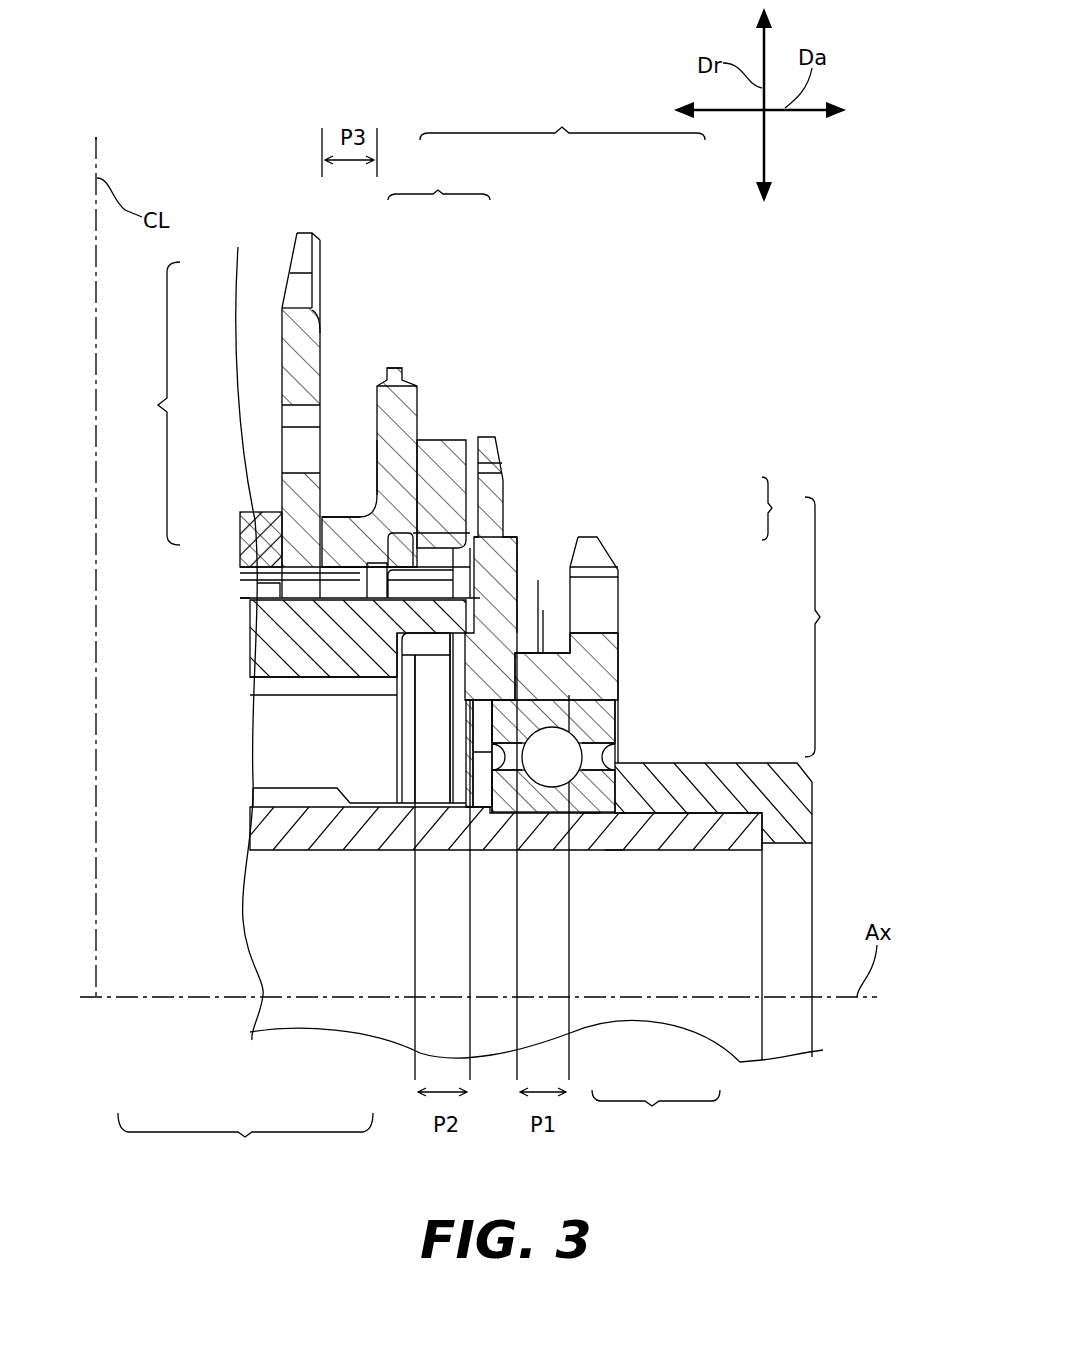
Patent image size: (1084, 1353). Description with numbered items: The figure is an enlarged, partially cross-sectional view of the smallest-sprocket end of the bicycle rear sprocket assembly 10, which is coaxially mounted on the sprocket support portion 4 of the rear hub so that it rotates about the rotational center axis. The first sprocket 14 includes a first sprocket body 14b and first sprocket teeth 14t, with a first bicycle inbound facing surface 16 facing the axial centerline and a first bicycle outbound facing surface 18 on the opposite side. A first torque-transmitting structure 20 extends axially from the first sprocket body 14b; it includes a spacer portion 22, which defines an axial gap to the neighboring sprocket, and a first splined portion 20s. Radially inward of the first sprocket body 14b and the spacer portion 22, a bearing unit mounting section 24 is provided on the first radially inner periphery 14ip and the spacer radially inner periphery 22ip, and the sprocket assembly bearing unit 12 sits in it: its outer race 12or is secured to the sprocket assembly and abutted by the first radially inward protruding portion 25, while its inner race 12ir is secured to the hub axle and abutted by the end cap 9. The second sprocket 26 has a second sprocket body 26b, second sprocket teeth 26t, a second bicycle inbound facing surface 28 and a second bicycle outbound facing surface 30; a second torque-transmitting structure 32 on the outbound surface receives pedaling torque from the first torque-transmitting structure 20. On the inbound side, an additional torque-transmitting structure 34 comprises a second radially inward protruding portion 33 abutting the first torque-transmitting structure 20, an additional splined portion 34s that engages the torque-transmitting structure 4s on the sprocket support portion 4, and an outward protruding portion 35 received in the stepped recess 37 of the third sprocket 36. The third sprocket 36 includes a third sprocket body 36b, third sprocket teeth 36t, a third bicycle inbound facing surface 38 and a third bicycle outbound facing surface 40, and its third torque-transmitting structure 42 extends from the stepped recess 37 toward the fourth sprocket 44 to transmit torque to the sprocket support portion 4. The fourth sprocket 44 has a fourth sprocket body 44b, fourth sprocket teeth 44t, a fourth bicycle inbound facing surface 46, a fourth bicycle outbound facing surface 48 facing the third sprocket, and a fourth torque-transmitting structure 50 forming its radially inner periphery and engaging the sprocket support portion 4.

The sprocket support portion 4 is at (272, 635).
The torque-transmitting structure 4s is at (273, 583).
The end cap 9 is at (814, 820).
The bicycle rear sprocket assembly 10 is at (745, 344).
The sprocket assembly bearing unit 12 is at (518, 972).
The outer race 12or is at (583, 790).
The inner race 12ir is at (613, 790).
The first sprocket 14 is at (701, 630).
The first sprocket teeth 14t is at (600, 602).
The first sprocket body 14b is at (598, 657).
The first radially inner periphery 14ip is at (618, 697).
The first bicycle inbound facing surface 16 is at (578, 592).
The first bicycle outbound facing surface 18 is at (618, 628).
The first torque-transmitting structure 20 is at (671, 565).
The first splined portion 20s is at (537, 650).
The spacer portion 22 is at (544, 630).
The spacer radially inner periphery 22ip is at (617, 745).
The bearing unit mounting section 24 is at (617, 720).
The first radially inward protruding portion 25 is at (618, 677).
The second sprocket 26 is at (562, 120).
The second sprocket teeth 26t is at (476, 432).
The second sprocket body 26b is at (517, 600).
The second bicycle inbound facing surface 28 is at (474, 540).
The second bicycle outbound facing surface 30 is at (533, 650).
The second torque-transmitting structure 32 is at (505, 557).
The second radially inward protruding portion 33 is at (440, 540).
The additional torque-transmitting structure 34 is at (406, 366).
The additional splined portion 34s is at (436, 500).
The outward protruding portion 35 is at (396, 548).
The third sprocket 36 is at (257, 706).
The third sprocket teeth 36t is at (393, 385).
The third sprocket body 36b is at (437, 535).
The stepped recess 37 is at (408, 470).
The third bicycle inbound facing surface 38 is at (357, 568).
The third bicycle outbound facing surface 40 is at (460, 555).
The third torque-transmitting structure 42 is at (346, 525).
The fourth sprocket 44 is at (207, 419).
The fourth sprocket teeth 44t is at (303, 248).
The fourth sprocket body 44b is at (284, 318).
The fourth bicycle inbound facing surface 46 is at (282, 350).
The fourth bicycle outbound facing surface 48 is at (326, 298).
The fourth torque-transmitting structure 50 is at (303, 568).